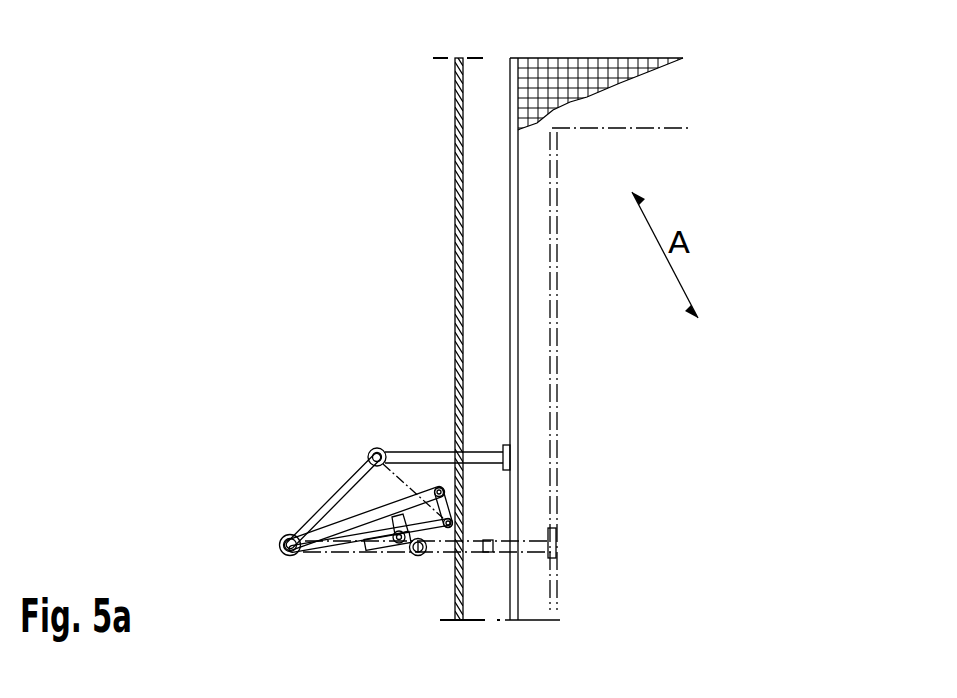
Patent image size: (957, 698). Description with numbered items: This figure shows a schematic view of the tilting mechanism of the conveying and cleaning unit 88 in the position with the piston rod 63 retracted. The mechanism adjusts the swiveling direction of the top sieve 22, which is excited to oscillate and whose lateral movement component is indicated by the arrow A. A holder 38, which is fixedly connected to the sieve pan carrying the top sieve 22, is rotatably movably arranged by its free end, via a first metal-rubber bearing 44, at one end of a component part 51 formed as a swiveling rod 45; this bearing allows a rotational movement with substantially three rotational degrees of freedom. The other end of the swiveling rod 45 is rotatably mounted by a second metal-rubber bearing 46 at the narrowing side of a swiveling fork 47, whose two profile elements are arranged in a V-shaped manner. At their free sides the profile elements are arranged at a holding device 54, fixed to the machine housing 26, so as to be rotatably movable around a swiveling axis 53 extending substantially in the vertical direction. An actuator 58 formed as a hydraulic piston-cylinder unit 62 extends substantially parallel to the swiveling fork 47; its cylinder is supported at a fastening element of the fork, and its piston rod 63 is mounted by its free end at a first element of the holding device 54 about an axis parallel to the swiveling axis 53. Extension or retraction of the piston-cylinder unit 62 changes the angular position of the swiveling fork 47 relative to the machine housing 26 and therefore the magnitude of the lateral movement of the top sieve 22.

The top sieve 22 is at (594, 310).
The conveying and cleaning unit 88 is at (602, 72).
The machine housing 26 is at (455, 168).
The holder 38 is at (377, 449).
The first metal-rubber bearing 44 is at (366, 454).
The swiveling rod 45 is at (333, 495).
The component part 51 is at (324, 506).
The second metal-rubber bearing 46 is at (281, 540).
The swiveling fork 47 is at (352, 530).
The swiveling axis 53 is at (435, 488).
The holding device 54 is at (447, 518).
The hydraulic piston-cylinder unit 62 is at (354, 589).
The actuator 58 is at (383, 552).
The piston rod 63 is at (430, 540).